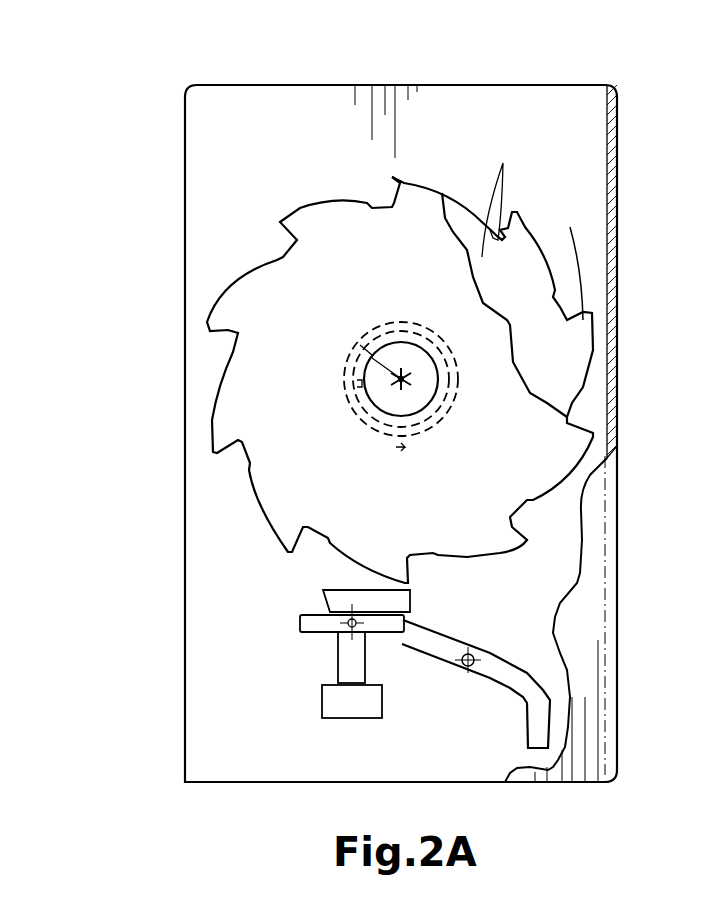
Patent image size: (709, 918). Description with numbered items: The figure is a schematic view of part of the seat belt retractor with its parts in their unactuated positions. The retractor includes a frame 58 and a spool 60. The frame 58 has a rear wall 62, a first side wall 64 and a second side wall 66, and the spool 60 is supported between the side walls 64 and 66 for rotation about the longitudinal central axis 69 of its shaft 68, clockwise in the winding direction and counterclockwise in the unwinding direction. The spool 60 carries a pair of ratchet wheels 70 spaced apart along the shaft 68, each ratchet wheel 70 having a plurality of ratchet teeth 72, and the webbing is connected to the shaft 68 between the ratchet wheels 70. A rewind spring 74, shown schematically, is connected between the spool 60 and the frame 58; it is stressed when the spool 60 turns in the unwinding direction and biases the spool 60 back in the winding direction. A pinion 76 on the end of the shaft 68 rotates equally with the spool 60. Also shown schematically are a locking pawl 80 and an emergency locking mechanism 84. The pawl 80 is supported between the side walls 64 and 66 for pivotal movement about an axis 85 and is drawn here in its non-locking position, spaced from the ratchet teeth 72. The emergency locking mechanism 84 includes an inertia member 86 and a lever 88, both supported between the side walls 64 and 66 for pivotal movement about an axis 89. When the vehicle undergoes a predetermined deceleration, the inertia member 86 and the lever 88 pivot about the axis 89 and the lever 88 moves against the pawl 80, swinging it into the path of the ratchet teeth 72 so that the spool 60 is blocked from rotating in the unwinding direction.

The frame 58 is at (183, 136).
The spool 60 is at (274, 299).
The rear wall 62 is at (619, 168).
The first side wall 64 is at (582, 147).
The second side wall 66 is at (598, 562).
The shaft 68 is at (395, 330).
The longitudinal central axis 69 is at (352, 343).
The ratchet wheels 70 is at (422, 263).
The ratchet teeth 72 is at (393, 185).
The rewind spring 74 is at (357, 428).
The pinion 76 is at (403, 378).
The locking pawl 80 is at (327, 592).
The emergency locking mechanism 84 is at (298, 625).
The axis 85 is at (472, 655).
The inertia member 86 is at (362, 703).
The lever 88 is at (318, 625).
The axis 89 is at (368, 632).